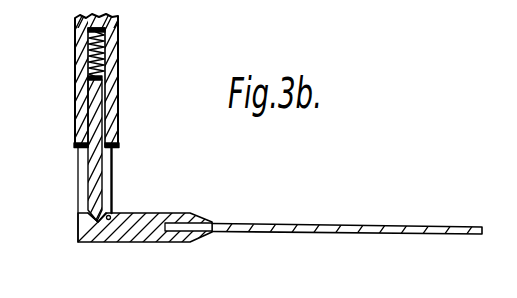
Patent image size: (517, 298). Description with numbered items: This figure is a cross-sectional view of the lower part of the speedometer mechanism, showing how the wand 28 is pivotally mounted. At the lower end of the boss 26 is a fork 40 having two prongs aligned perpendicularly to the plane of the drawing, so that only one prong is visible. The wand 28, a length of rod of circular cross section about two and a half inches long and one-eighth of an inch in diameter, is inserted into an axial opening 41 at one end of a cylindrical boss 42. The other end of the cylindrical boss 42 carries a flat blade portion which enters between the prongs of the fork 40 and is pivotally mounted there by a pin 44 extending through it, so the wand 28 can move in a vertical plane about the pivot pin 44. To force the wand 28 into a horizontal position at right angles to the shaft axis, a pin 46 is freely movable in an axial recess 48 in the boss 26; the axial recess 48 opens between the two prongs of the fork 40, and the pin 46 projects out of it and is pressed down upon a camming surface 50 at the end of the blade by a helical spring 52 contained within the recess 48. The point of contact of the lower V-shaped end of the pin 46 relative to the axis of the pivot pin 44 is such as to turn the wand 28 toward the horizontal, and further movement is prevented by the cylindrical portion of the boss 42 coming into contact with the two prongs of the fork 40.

The boss 26 is at (114, 94).
The wand 28 is at (333, 226).
The fork 40 is at (113, 176).
The axial opening 41 is at (180, 238).
The cylindrical boss 42 is at (168, 212).
The pin 44 is at (111, 216).
The pin 46 is at (96, 134).
The axial recess 48 is at (105, 48).
The camming surface 50 is at (88, 218).
The helical spring 52 is at (88, 48).